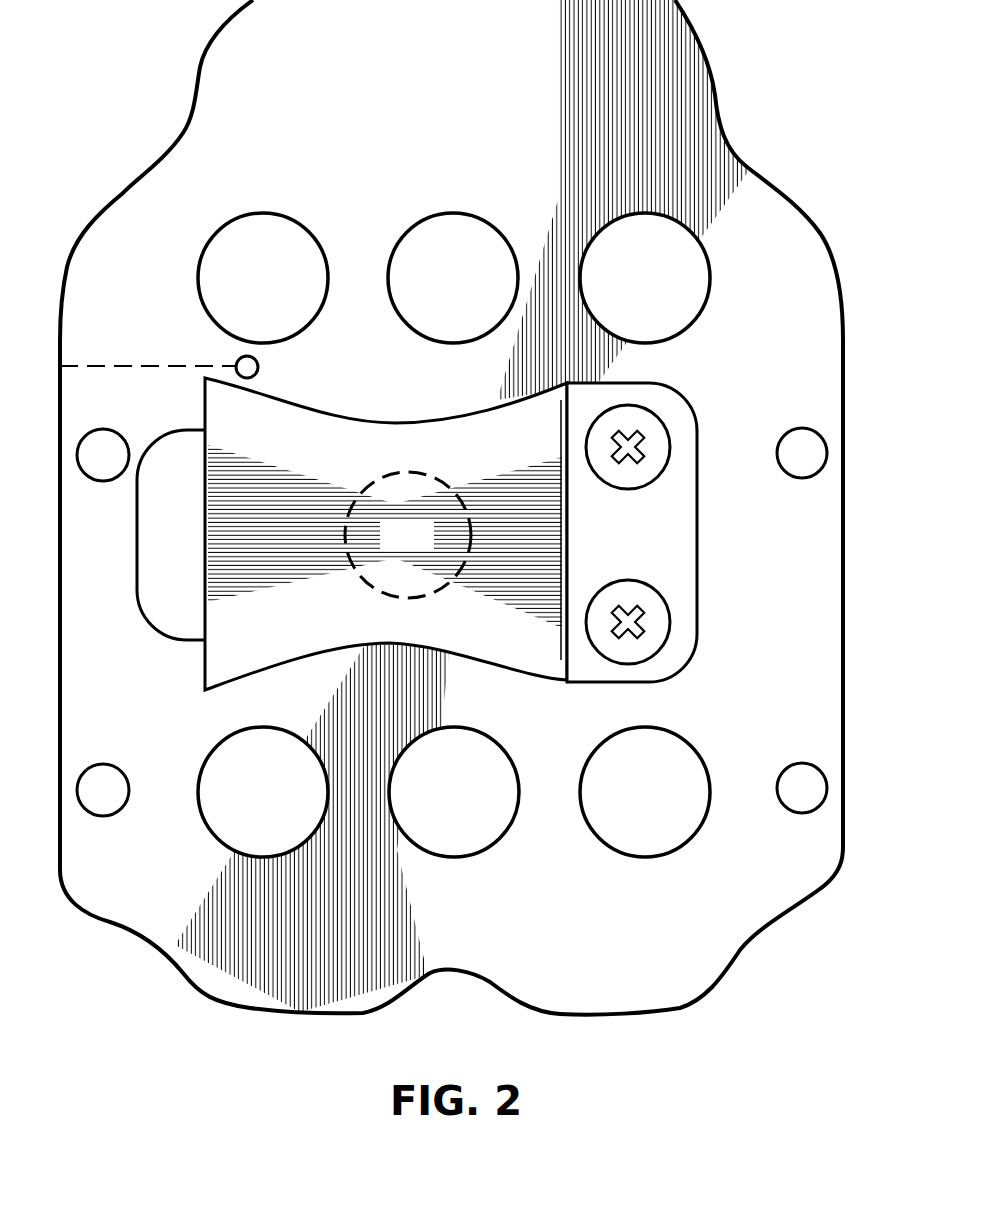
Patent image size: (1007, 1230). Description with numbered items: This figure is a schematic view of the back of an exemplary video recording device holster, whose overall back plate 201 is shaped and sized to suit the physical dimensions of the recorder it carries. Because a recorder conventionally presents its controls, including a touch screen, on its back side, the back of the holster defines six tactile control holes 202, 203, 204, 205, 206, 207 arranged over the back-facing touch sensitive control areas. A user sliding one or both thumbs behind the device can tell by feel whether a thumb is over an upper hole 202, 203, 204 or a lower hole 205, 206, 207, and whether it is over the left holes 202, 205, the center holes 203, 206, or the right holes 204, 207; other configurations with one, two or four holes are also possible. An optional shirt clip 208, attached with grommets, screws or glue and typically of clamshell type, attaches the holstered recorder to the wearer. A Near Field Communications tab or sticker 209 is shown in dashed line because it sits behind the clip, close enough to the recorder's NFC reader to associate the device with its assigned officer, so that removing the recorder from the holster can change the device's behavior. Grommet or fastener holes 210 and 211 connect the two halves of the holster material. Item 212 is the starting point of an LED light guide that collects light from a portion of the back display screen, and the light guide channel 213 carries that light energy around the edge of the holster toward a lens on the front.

The base plate 201 is at (187, 103).
The tactile control hole 202 is at (200, 240).
The tactile control hole 203 is at (415, 222).
The tactile control hole 204 is at (612, 222).
The tactile control hole 205 is at (210, 838).
The tactile control hole 206 is at (490, 852).
The tactile control hole 207 is at (602, 845).
The shirt clip 208 is at (650, 549).
The NFC tab or sticker 209 is at (432, 549).
The grommet or fastener holes 210 is at (102, 482).
The grommet or fastener holes 211 is at (805, 762).
The light guide source 212 is at (258, 367).
The light guide channel 213 is at (155, 366).